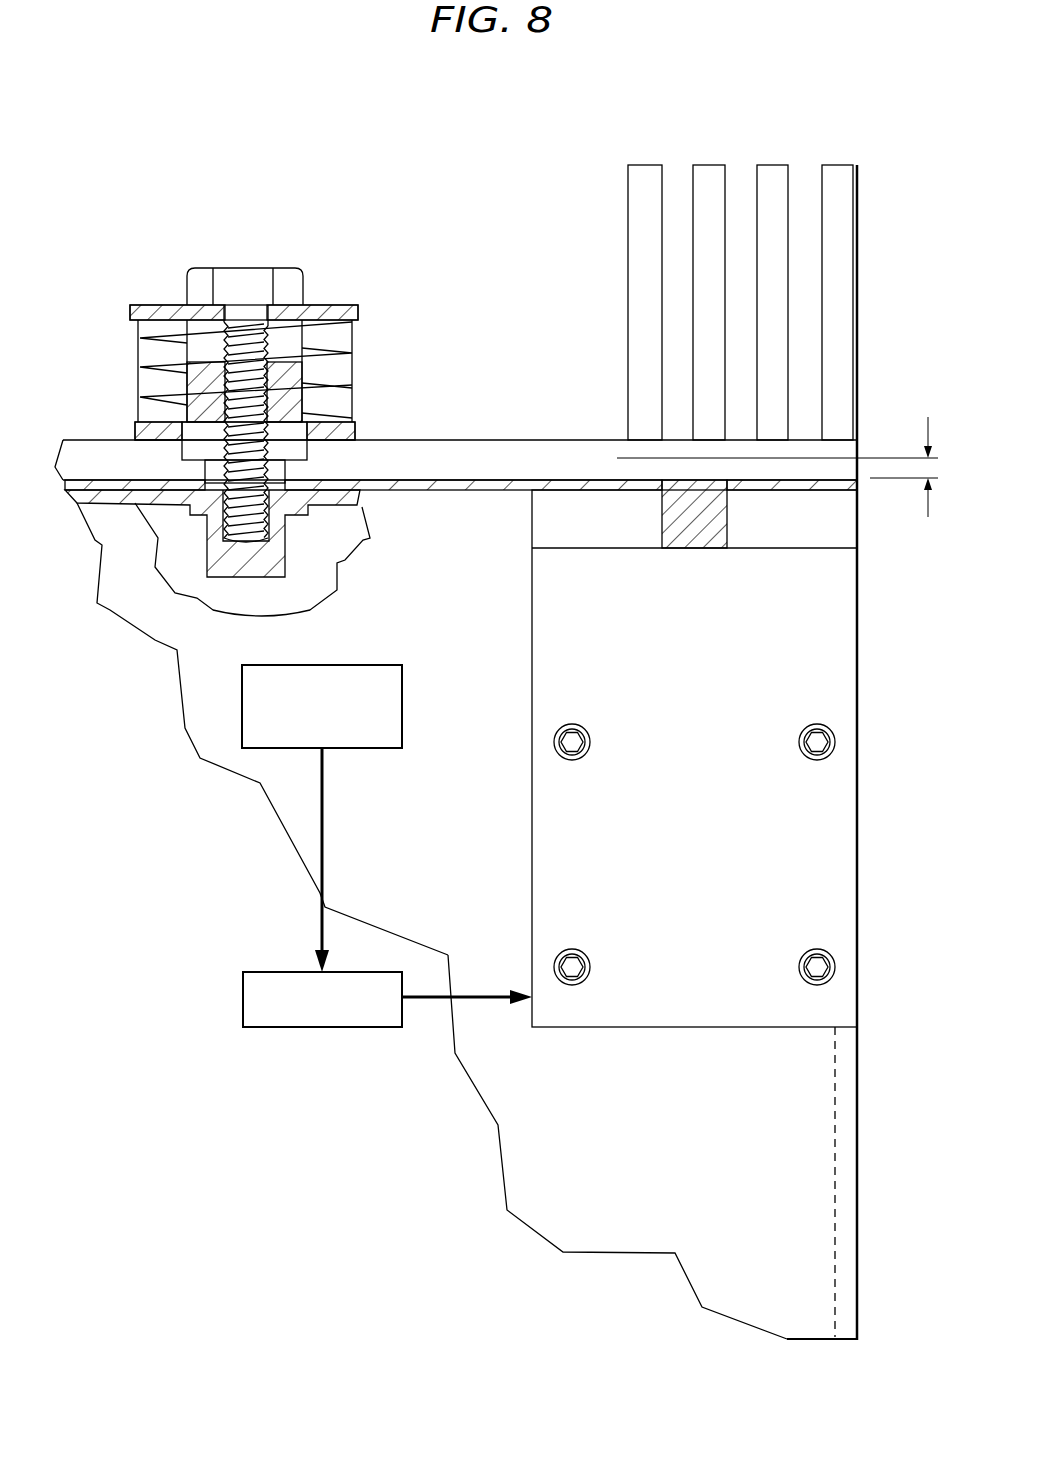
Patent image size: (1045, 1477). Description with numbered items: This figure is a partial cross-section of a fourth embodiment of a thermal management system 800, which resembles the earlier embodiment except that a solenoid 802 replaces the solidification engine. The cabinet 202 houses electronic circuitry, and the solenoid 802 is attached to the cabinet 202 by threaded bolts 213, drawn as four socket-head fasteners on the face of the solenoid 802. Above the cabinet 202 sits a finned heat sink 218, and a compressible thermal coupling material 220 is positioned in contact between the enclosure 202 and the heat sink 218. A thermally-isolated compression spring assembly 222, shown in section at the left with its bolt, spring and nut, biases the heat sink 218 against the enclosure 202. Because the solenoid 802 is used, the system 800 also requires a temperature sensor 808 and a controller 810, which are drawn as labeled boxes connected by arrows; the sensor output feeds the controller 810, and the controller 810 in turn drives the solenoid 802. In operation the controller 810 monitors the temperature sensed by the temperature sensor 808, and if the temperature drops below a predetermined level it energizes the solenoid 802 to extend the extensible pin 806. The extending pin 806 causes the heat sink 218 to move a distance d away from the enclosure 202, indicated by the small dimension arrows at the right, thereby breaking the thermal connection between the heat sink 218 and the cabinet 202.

The cabinet 202 is at (812, 1233).
The threaded bolts 213 is at (555, 743).
The heat sink 218 is at (857, 283).
The thermal coupling material 220 is at (445, 491).
The thermally-isolated compression spring assembly 222 is at (352, 262).
The system 800 is at (205, 825).
The solenoid 802 is at (808, 878).
The extensible pin 806 is at (700, 515).
The temperature sensor 808 is at (403, 697).
The controller 810 is at (243, 997).